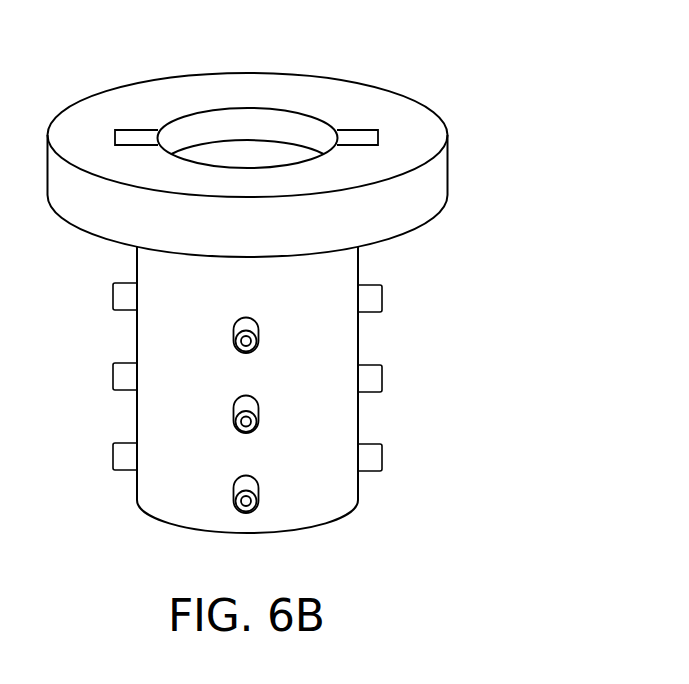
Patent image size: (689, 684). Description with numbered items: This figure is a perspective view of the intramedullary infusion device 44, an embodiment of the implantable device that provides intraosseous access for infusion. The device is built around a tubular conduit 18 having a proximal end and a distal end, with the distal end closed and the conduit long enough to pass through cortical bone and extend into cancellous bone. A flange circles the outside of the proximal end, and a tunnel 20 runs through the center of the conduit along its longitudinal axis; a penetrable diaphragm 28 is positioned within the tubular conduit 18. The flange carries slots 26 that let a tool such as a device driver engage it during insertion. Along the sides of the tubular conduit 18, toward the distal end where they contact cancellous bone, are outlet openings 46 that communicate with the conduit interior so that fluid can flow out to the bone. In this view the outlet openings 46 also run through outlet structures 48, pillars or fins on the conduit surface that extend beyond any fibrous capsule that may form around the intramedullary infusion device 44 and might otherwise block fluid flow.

The intramedullary infusion device 44 is at (295, 272).
The tunnel 20 is at (288, 121).
The penetrable diaphragm 28 is at (239, 155).
The slot 26 is at (357, 135).
The tubular conduit 18 is at (328, 428).
The outlet structure 48 is at (382, 297).
The outlet opening 46 is at (257, 340).